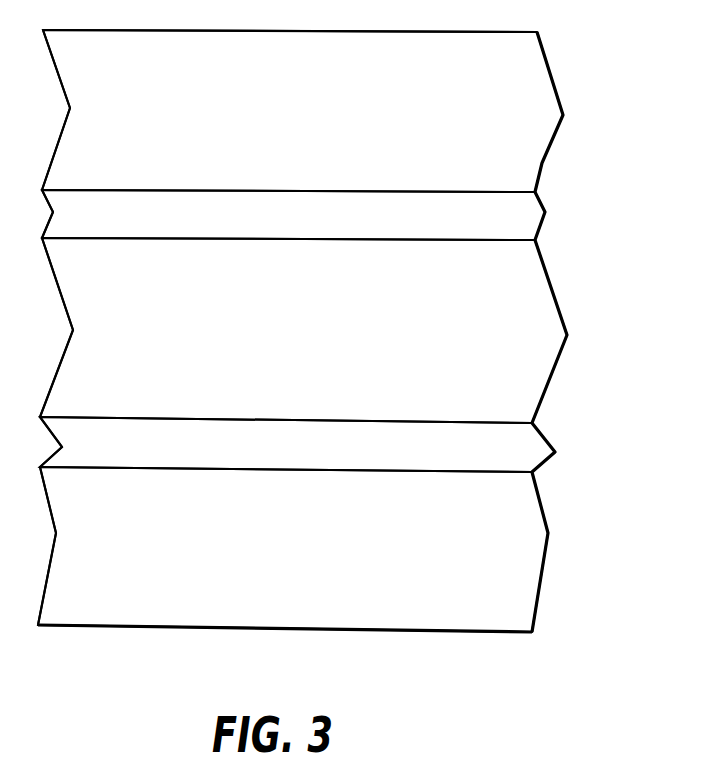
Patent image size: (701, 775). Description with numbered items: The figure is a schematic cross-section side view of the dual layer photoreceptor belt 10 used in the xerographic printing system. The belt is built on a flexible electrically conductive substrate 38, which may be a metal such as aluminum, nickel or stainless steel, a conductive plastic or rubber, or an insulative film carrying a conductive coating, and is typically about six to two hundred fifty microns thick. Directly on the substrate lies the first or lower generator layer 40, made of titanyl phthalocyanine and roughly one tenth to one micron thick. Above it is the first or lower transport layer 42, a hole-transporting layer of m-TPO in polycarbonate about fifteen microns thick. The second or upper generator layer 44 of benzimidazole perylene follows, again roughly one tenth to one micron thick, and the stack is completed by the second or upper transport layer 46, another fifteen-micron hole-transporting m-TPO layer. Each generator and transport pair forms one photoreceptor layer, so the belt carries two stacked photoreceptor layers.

The photoreceptor belt 10 is at (587, 662).
The flexible electrically conductive substrate 38 is at (535, 543).
The first or lower generator layer 40 is at (535, 450).
The first or lower transport layer 42 is at (540, 372).
The second or upper generator layer 44 is at (530, 222).
The second or upper transport layer 46 is at (548, 108).